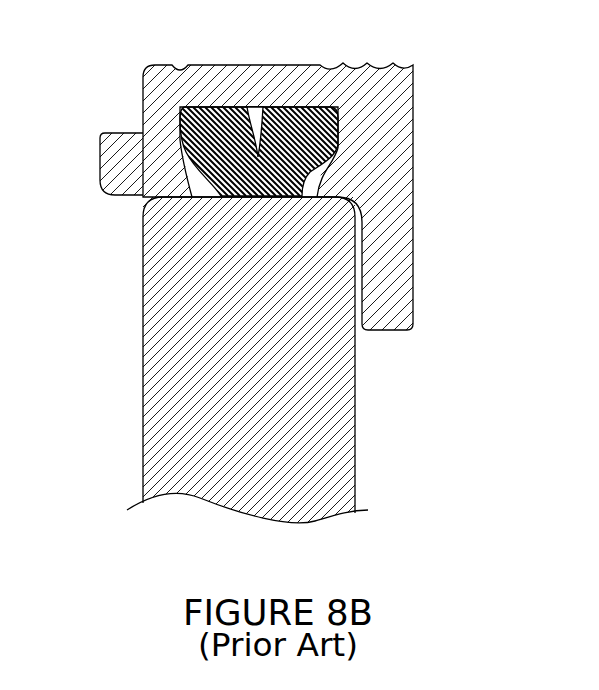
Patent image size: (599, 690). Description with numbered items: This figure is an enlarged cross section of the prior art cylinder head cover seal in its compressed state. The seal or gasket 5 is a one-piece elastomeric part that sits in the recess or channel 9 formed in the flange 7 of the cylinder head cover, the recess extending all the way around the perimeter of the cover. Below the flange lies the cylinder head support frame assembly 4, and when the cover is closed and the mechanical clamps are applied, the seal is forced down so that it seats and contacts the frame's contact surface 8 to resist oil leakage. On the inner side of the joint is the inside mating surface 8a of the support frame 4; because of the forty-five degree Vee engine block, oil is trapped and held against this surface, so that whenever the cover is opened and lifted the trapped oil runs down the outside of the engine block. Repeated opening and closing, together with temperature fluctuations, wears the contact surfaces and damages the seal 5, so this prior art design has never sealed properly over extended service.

The cylinder head support frame assembly 4 is at (180, 362).
The seal or gasket 5 is at (338, 128).
The flange 7 is at (130, 158).
The contact surface 8 is at (188, 189).
The inside mating surface 8a is at (312, 189).
The recess or channel 9 is at (259, 100).